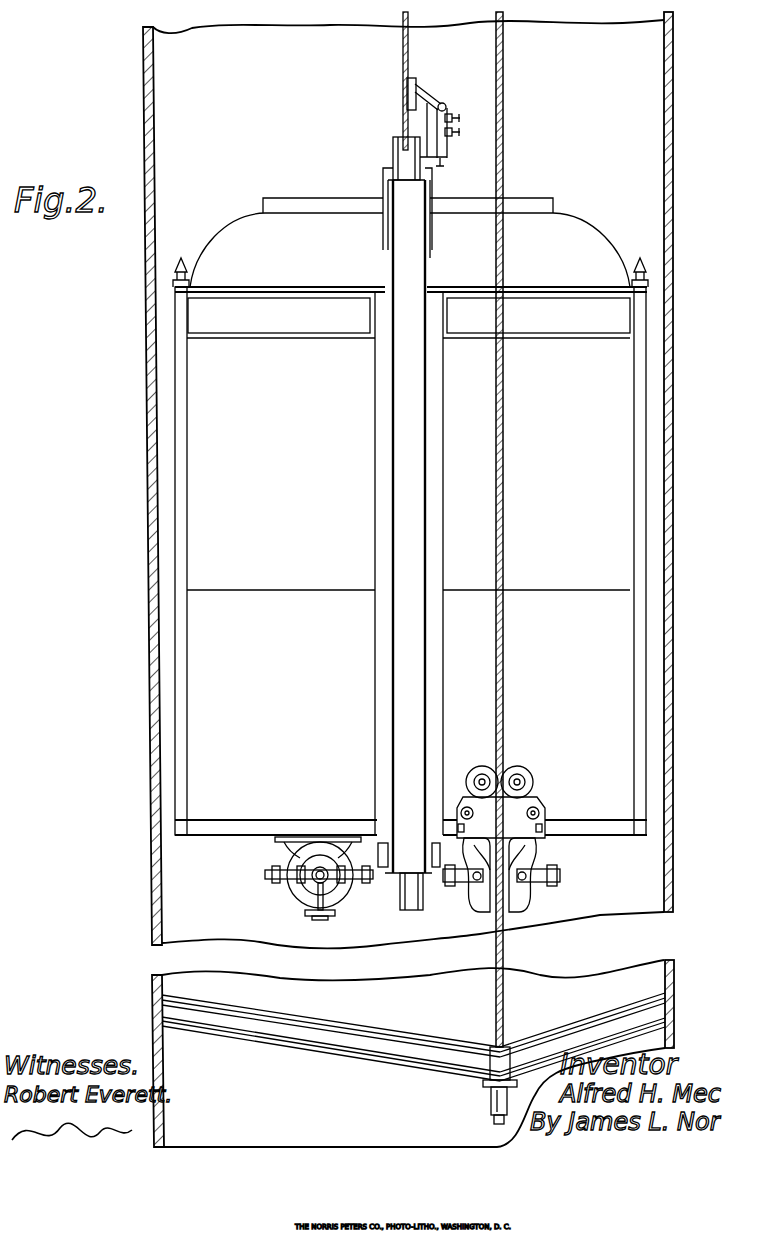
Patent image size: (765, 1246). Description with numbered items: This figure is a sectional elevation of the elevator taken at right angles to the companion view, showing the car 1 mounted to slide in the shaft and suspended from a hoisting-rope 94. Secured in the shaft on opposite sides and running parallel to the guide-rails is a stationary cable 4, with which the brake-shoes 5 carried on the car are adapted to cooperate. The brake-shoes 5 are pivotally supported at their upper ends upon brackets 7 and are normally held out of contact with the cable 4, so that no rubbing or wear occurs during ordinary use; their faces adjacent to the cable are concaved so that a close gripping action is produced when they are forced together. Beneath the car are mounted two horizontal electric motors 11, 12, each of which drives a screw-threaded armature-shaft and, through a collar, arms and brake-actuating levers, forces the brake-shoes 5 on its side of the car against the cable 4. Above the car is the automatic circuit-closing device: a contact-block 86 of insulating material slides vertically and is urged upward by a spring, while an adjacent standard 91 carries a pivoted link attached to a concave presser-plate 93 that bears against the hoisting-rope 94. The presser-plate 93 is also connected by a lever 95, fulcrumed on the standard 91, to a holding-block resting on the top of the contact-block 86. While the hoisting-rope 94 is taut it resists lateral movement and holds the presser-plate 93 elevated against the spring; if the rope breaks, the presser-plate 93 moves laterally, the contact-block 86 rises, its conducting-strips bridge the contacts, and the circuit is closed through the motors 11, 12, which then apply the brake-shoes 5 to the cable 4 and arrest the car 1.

The car 1 is at (410, 539).
The cables 4 is at (512, 672).
The brake-shoes 5 is at (524, 893).
The brackets 7 is at (545, 811).
The electric motor 11 is at (297, 887).
The electric motor 12 is at (533, 858).
The contact-block 86 is at (446, 143).
The standard 91 is at (427, 132).
The presser-plate 93 is at (407, 98).
The hoisting-rope 94 is at (403, 50).
The lever 95 is at (419, 93).